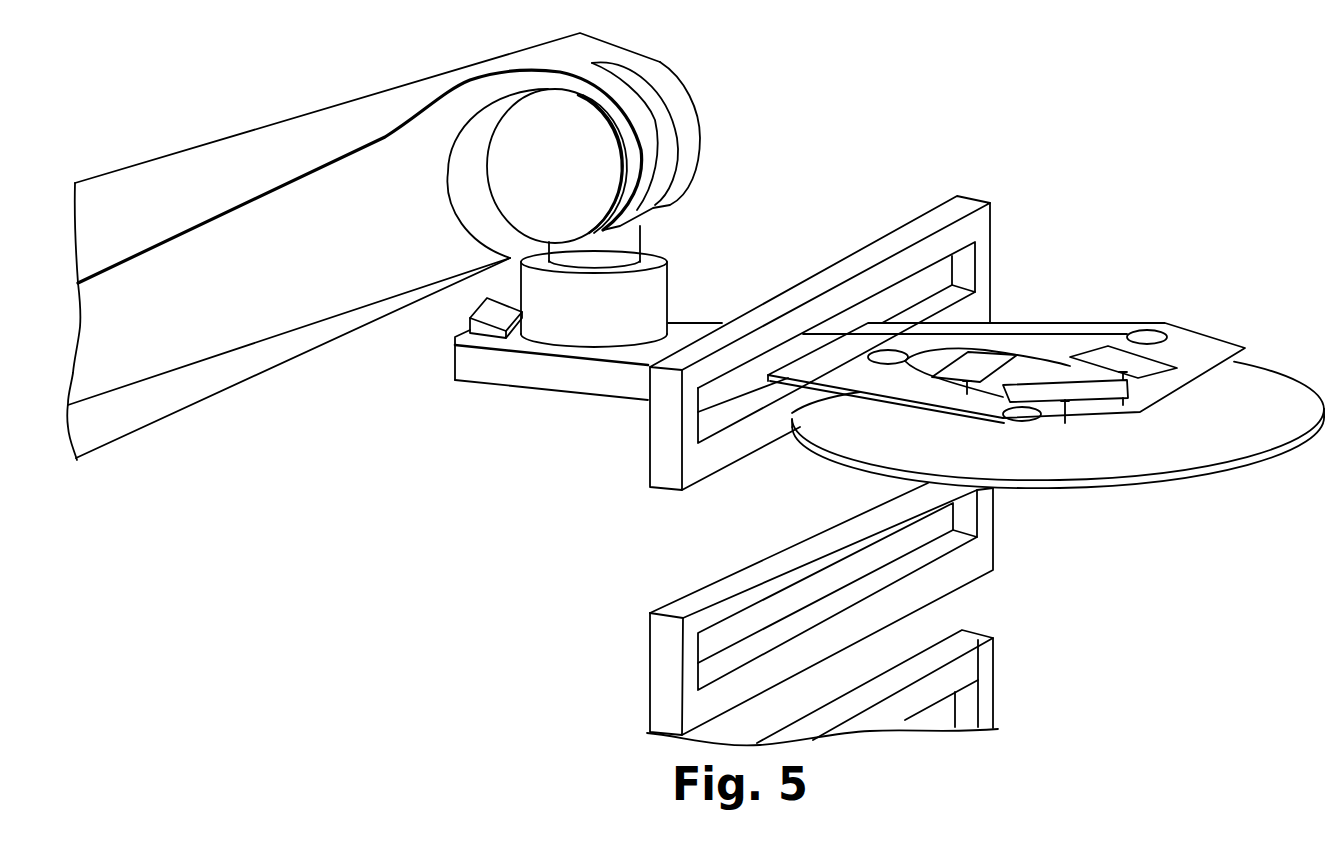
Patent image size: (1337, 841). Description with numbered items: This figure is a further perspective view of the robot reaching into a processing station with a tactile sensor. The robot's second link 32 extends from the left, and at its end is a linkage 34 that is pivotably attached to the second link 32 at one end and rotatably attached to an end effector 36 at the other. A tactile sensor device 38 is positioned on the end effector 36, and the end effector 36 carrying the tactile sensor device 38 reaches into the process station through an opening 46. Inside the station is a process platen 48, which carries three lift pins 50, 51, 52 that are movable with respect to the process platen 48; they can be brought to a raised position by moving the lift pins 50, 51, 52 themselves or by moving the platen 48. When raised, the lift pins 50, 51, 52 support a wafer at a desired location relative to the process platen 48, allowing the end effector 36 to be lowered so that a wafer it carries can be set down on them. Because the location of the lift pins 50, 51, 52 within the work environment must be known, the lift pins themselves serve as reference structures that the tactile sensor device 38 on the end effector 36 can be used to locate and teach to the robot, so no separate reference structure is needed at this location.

The second link 32 is at (435, 140).
The linkage 34 is at (657, 288).
The end effector 36 is at (690, 330).
The tactile sensor device 38 is at (1216, 346).
The opening 46 is at (935, 280).
The process platen 48 is at (1197, 453).
The lift pin 50 is at (965, 386).
The lift pin 51 is at (1068, 416).
The lift pin 52 is at (1130, 376).